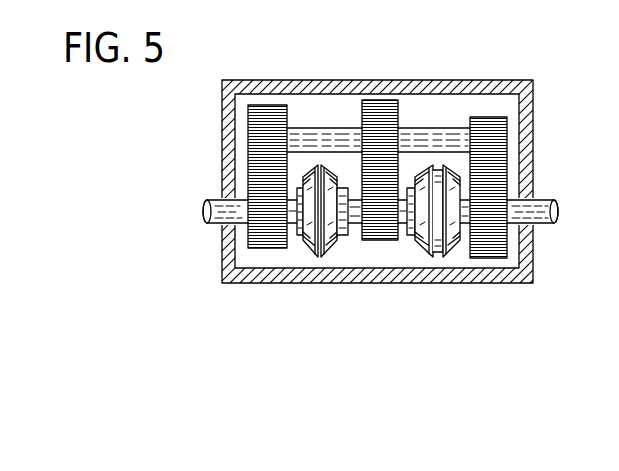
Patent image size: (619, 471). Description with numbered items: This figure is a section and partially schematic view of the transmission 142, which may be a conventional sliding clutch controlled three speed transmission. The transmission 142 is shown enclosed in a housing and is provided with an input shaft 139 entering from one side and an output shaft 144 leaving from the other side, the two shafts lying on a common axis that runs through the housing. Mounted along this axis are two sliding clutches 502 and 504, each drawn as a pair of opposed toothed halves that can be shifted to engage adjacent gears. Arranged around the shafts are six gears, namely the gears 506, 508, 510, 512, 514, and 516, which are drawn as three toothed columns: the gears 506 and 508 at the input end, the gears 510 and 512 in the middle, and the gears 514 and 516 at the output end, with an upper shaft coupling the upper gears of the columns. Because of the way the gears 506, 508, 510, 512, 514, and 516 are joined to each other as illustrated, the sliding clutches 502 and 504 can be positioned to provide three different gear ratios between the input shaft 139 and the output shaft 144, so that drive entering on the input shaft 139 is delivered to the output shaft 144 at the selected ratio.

The input shaft 139 is at (211, 226).
The transmission 142 is at (455, 76).
The output shaft 144 is at (545, 200).
The sliding clutch 502 is at (308, 257).
The sliding clutch 504 is at (421, 257).
The gear 506 is at (262, 249).
The gear 508 is at (263, 105).
The gear 510 is at (383, 100).
The gear 512 is at (385, 242).
The gear 514 is at (508, 135).
The gear 516 is at (506, 239).